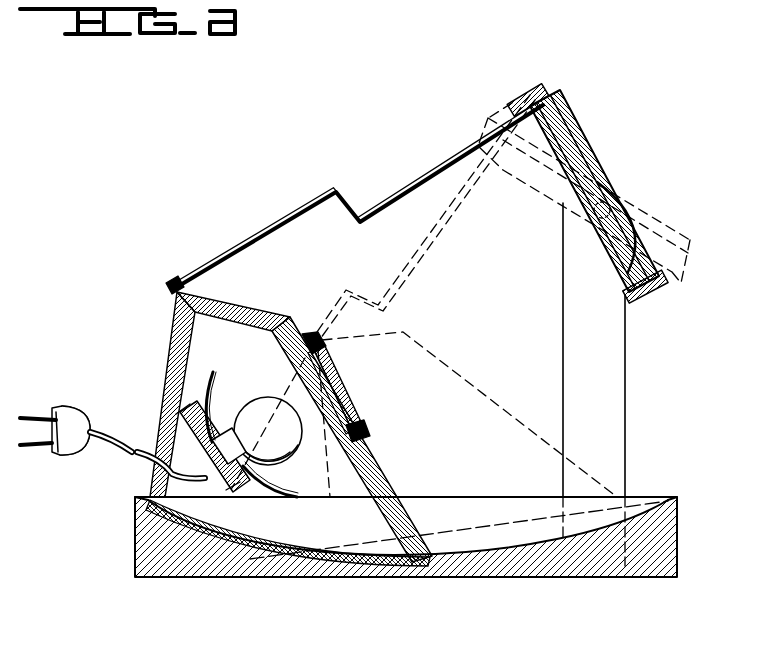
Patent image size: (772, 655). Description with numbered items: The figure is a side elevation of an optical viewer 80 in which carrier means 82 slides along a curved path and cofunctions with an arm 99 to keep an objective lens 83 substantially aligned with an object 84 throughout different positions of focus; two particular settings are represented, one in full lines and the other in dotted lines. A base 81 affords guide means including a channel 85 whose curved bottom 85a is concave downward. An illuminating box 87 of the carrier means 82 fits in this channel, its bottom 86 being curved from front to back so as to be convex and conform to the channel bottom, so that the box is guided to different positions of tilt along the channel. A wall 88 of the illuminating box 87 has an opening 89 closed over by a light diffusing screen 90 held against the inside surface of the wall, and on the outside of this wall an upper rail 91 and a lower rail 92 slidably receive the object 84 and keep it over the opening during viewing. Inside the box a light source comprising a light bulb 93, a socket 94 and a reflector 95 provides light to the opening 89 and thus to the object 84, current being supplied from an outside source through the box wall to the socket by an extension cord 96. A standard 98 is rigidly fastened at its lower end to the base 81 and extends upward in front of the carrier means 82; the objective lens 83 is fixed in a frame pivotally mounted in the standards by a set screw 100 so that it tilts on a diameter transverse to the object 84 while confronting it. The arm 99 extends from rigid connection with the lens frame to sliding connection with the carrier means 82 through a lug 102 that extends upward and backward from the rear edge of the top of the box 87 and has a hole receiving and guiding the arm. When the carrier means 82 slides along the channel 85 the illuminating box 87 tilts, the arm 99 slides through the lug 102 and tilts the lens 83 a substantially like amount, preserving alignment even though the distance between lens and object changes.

The optical viewer 80 is at (392, 150).
The base 81 is at (365, 578).
The carrier means 82 is at (266, 296).
The objective lens 83 is at (641, 247).
The object 84 is at (341, 386).
The channel 85 is at (460, 525).
The curved bottom 85a is at (497, 552).
The bottom of the box 86 is at (240, 545).
The illuminating box 87 is at (178, 352).
The wall 88 is at (393, 490).
The opening 89 is at (343, 405).
The light diffusing screen 90 is at (293, 395).
The upper rail 91 is at (320, 339).
The lower rail 92 is at (364, 432).
The light bulb 93 is at (268, 410).
The socket 94 is at (212, 430).
The reflector 95 is at (278, 485).
The extension cord 96 is at (119, 438).
The standard 98 is at (620, 401).
The arm 99 is at (312, 207).
The set screw 100 is at (627, 197).
The lug 102 is at (172, 282).